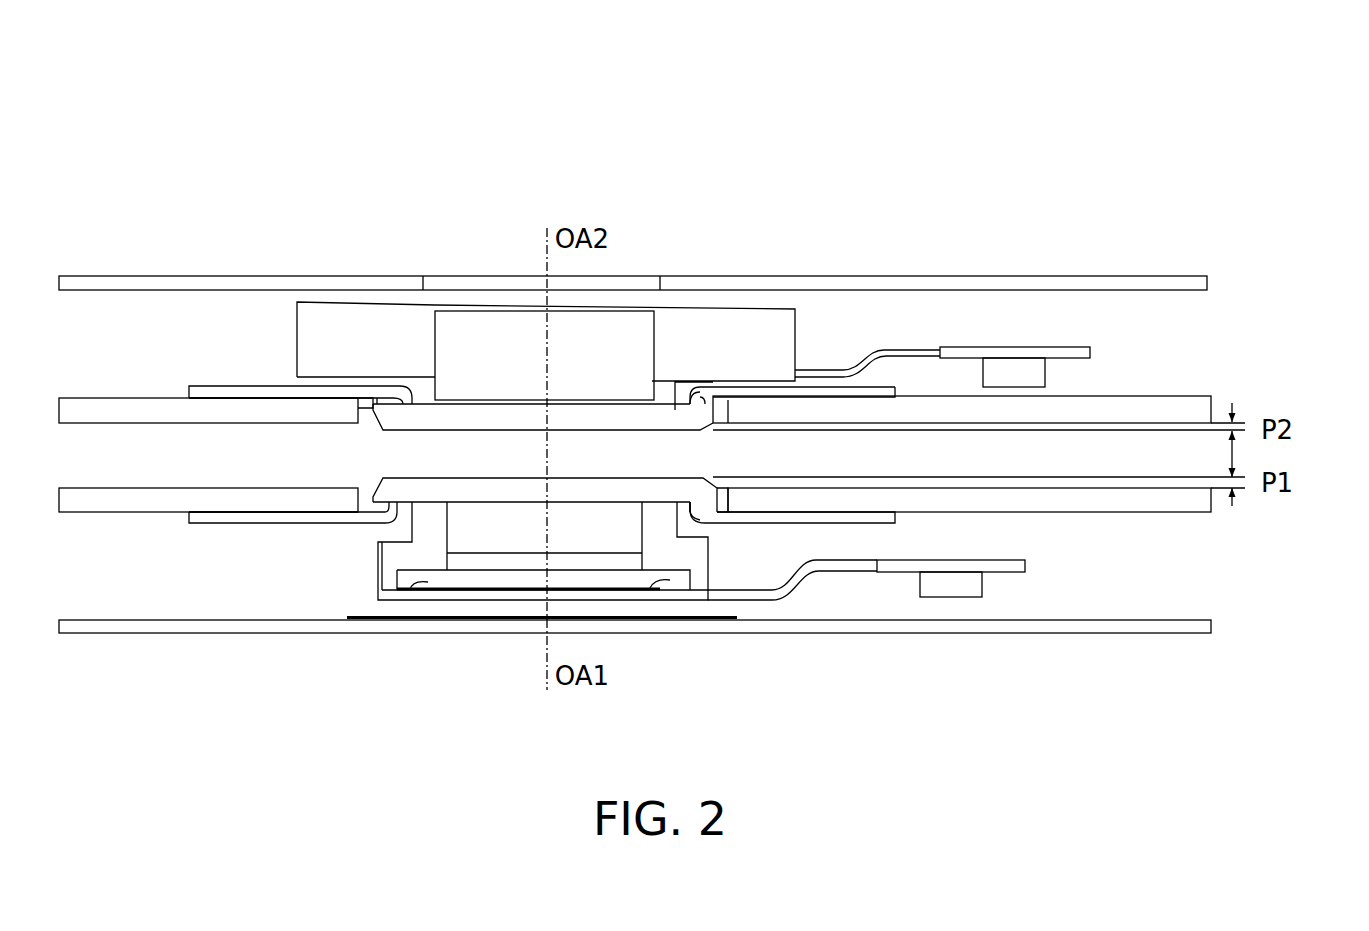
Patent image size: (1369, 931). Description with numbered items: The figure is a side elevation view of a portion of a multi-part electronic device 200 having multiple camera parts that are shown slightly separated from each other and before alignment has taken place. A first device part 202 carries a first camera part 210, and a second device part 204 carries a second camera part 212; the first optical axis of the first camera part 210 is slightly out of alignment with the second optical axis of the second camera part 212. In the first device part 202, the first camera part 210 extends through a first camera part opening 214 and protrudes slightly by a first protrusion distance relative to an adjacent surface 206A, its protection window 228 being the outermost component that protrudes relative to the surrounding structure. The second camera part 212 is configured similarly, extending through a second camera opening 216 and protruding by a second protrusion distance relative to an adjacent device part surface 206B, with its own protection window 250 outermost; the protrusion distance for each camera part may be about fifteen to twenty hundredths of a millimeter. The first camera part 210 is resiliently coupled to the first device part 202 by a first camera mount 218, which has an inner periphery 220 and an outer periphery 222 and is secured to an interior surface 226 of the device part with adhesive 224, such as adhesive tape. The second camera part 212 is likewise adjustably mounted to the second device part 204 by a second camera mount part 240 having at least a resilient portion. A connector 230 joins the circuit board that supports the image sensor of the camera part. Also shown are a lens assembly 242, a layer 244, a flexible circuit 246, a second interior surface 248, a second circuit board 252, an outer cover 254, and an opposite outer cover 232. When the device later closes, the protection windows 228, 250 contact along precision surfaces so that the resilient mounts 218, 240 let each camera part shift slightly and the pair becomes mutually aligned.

The camera module assembly 200 is at (1192, 166).
The first device part 202 is at (1247, 569).
The second device part 204 is at (1232, 356).
The adjacent surface 206A is at (348, 489).
The adjacent device part surface 206B is at (340, 426).
The first camera part 210 is at (212, 589).
The second camera part 212 is at (197, 347).
The first camera part opening 214 is at (375, 490).
The second camera opening 216 is at (375, 412).
The first camera mount 218 is at (345, 523).
The inner periphery 220 is at (722, 527).
The outer periphery 222 is at (890, 524).
The adhesive 224 is at (186, 512).
The interior surface 226 is at (1055, 513).
The protection window 228 is at (690, 477).
The connector 230 is at (1005, 573).
The bottom cover 232 is at (1000, 633).
The second camera mount part 240 is at (245, 386).
The lens barrel 242 is at (295, 383).
The adhesive layer 244 is at (190, 388).
The flexible circuit end 246 is at (895, 392).
The second rigid substrate 248 is at (1100, 396).
The protection window 250 is at (570, 431).
The second circuit board 252 is at (1012, 347).
The top cover 254 is at (713, 276).